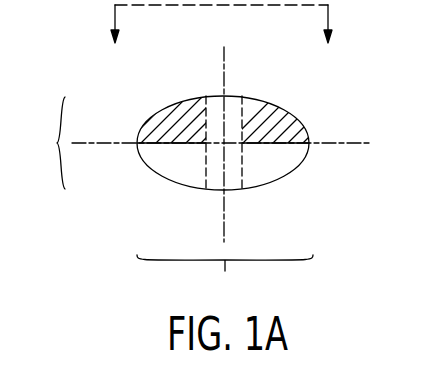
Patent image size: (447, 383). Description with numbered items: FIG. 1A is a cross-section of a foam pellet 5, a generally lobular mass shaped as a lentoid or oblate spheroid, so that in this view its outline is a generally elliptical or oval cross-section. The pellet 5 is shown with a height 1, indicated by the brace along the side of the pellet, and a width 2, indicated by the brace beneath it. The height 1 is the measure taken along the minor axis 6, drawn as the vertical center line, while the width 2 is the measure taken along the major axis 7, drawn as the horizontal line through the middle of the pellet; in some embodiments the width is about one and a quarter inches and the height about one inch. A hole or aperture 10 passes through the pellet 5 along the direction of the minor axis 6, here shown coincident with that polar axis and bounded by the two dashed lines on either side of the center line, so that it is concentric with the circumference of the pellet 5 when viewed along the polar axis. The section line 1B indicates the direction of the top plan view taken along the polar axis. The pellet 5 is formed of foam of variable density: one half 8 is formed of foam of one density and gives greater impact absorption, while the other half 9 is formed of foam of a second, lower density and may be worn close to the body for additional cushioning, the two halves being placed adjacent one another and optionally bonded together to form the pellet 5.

The height 1 is at (205, 143).
The width 2 is at (225, 278).
The foam pellet 5 is at (166, 81).
The minor axis 6 is at (222, 202).
The major axis 7 is at (346, 141).
The high-density half 8 is at (308, 182).
The low-density half 9 is at (273, 102).
The aperture 10 is at (234, 102).
The section line 1B- 1B is at (223, 44).